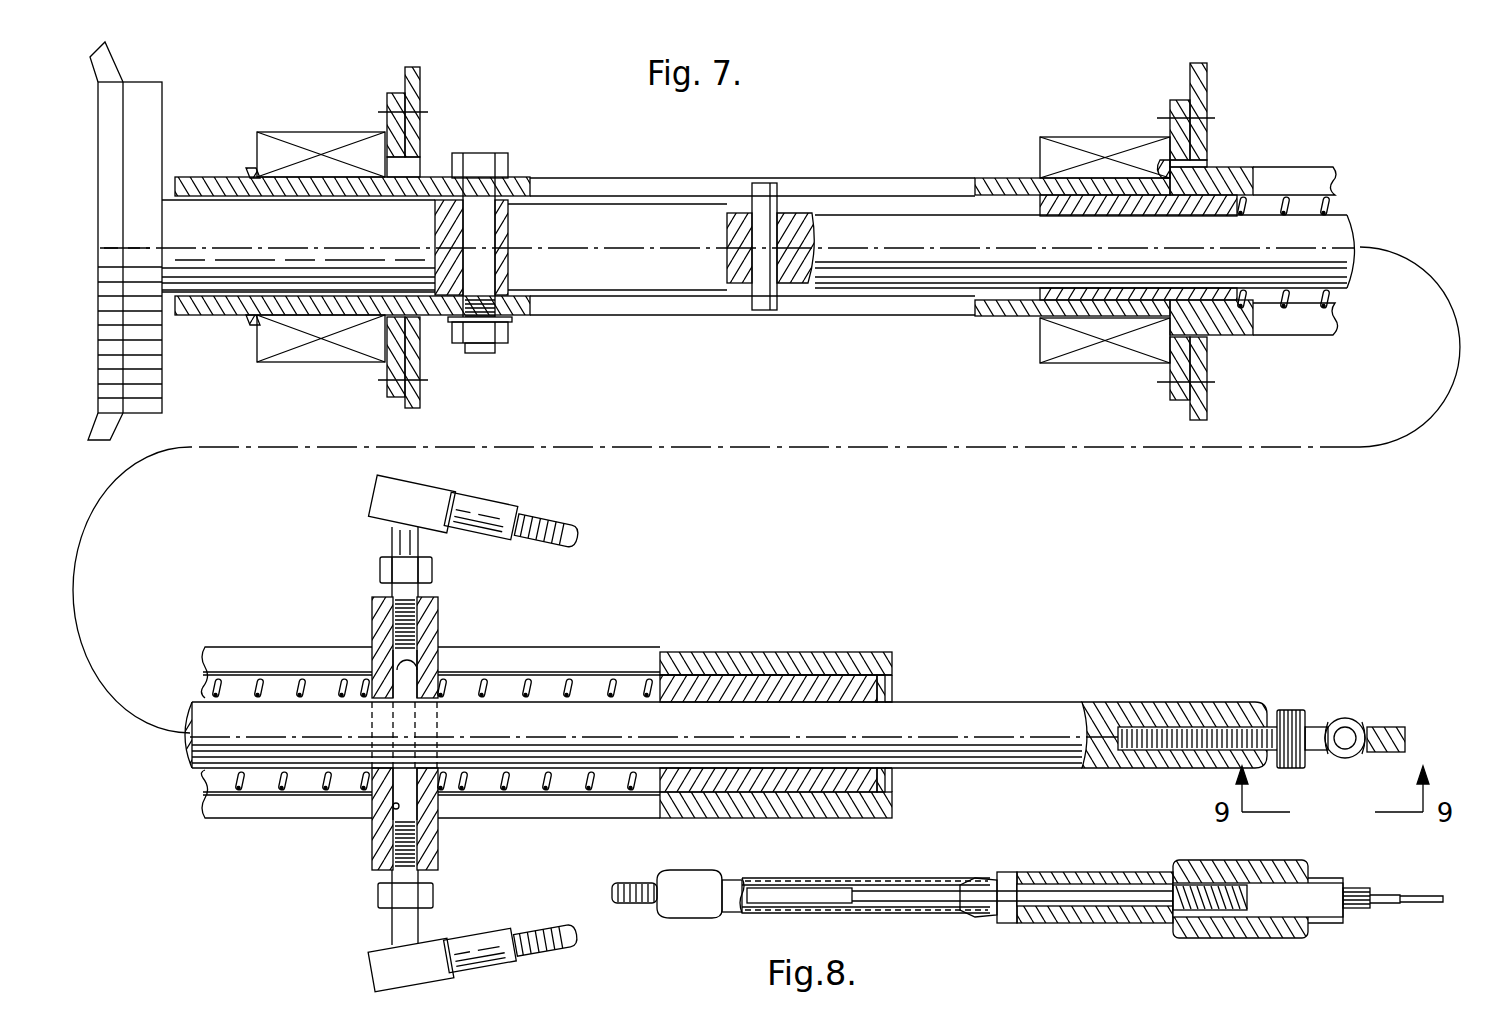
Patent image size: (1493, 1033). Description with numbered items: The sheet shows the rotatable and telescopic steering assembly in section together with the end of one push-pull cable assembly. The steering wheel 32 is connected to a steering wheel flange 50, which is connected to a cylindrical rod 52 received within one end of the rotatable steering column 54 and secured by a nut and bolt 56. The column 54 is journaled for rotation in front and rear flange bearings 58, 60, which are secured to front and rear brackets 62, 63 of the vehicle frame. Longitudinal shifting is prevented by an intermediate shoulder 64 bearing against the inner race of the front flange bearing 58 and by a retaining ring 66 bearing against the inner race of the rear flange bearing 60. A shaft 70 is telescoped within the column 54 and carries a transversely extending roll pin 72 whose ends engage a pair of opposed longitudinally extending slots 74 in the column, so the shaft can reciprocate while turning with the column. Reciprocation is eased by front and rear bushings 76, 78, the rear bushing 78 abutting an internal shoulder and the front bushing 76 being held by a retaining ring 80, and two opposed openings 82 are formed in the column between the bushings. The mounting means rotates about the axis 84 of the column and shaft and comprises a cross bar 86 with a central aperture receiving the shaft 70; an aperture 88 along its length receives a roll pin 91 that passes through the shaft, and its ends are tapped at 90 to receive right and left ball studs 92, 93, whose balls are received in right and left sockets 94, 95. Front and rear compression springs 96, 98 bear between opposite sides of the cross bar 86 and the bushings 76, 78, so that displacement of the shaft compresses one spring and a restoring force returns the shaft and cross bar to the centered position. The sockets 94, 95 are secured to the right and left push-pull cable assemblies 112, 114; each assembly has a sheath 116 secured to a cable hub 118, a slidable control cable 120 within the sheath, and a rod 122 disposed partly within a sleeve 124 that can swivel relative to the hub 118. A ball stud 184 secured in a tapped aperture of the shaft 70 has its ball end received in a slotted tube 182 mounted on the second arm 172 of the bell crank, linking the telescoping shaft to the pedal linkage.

In FIG. 7, the steering wheel 32 is at (118, 64).
In FIG. 7, the steering wheel flange 50 is at (162, 96).
In FIG. 7, the cylindrical rod 52 is at (444, 246).
In FIG. 7, the rotatable steering column 54 is at (437, 175).
In FIG. 7, the nut and bolt 56 is at (494, 352).
In FIG. 7, the front flange bearing 58 is at (1106, 137).
In FIG. 7, the rear flange bearing 60 is at (310, 132).
In FIG. 7, the front bracket 62 is at (1207, 80).
In FIG. 7, the rear bracket 63 is at (420, 82).
In FIG. 7, the intermediate shoulder 64 is at (1160, 165).
In FIG. 7, the retaining ring 66 is at (241, 170).
In FIG. 7, the shaft 70 is at (848, 280).
In FIG. 7, the roll pin 72 is at (770, 183).
In FIG. 7, the longitudinally extending slots 74 is at (542, 298).
In FIG. 7, the front bushing 76 is at (785, 676).
In FIG. 7, the rear bushing 78 is at (1093, 290).
In FIG. 7, the retaining ring 80 is at (890, 680).
In FIG. 7, the longitudinally extending openings 82 is at (1267, 167).
In FIG. 7, the axis 84 is at (597, 206).
In FIG. 7, the cross bar 86 is at (372, 603).
In FIG. 7, the aperture 88 is at (395, 806).
In FIG. 7, the tapped ends 90 is at (393, 628).
In FIG. 7, the roll pin 91 is at (417, 667).
In FIG. 7, the right ball stud 92 is at (392, 920).
In FIG. 7, the left ball stud 93 is at (390, 538).
In FIG. 7, the right socket 94 is at (378, 963).
In FIG. 7, the left socket 95 is at (437, 495).
In FIG. 7, the front compression spring 96 is at (542, 652).
In FIG. 7, the rear compression spring 98 is at (1340, 205).
In FIG. 7, the right push-pull cable assembly 112 is at (530, 501).
In FIG. 7, the left push-pull cable assembly 114 is at (533, 960).
In FIG. 8, the sheath 116 is at (1354, 886).
In FIG. 8, the cable hub 118 is at (1195, 862).
In FIG. 8, the control cable 120 is at (905, 890).
In FIG. 8, the rod 122 is at (612, 885).
In FIG. 8, the sleeve 124 is at (788, 886).
In FIG. 7, the second arm 172 is at (1390, 727).
In FIG. 7, the slotted tube 182 is at (1366, 718).
In FIG. 7, the ball stud 184 is at (1315, 722).